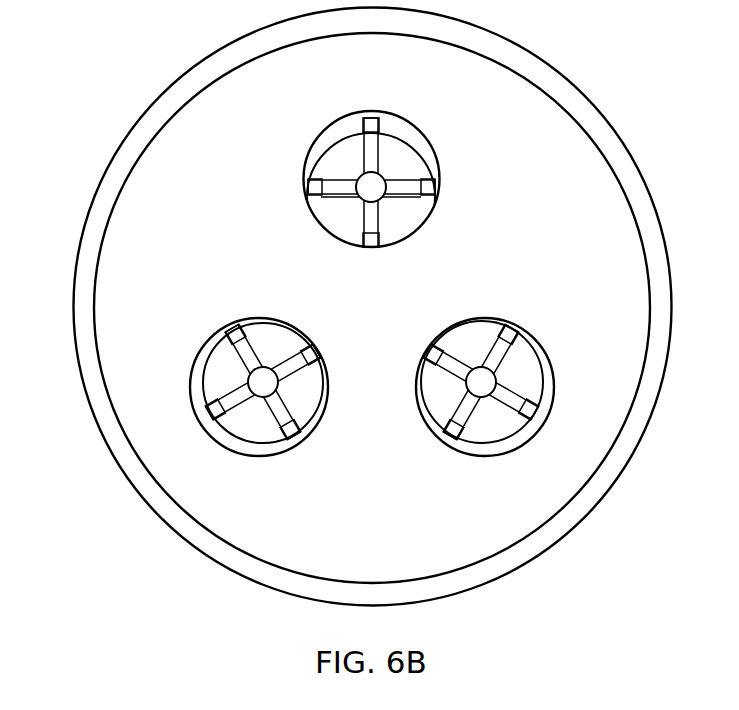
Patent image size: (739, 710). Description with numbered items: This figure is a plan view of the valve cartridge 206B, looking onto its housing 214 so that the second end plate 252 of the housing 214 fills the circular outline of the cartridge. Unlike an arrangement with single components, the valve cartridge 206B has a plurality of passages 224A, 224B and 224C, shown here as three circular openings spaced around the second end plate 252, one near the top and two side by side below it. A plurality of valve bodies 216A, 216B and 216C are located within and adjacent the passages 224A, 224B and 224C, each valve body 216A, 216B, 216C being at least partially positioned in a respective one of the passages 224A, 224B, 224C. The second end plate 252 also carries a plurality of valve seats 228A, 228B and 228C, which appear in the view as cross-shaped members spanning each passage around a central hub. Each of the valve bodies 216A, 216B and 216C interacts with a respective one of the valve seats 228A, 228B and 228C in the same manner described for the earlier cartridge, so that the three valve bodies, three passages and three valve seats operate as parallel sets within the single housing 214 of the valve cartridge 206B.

The valve cartridge 206B is at (373, 304).
The housing 214 is at (373, 307).
The second end plate 252 is at (493, 150).
The valve body 216A is at (237, 410).
The valve body 216B is at (506, 410).
The valve body 216C is at (339, 168).
The passage 224A is at (250, 415).
The passage 224B is at (492, 415).
The passage 224C is at (392, 160).
The valve seat 228A is at (293, 443).
The valve seat 228B is at (448, 443).
The valve seat 228C is at (306, 151).